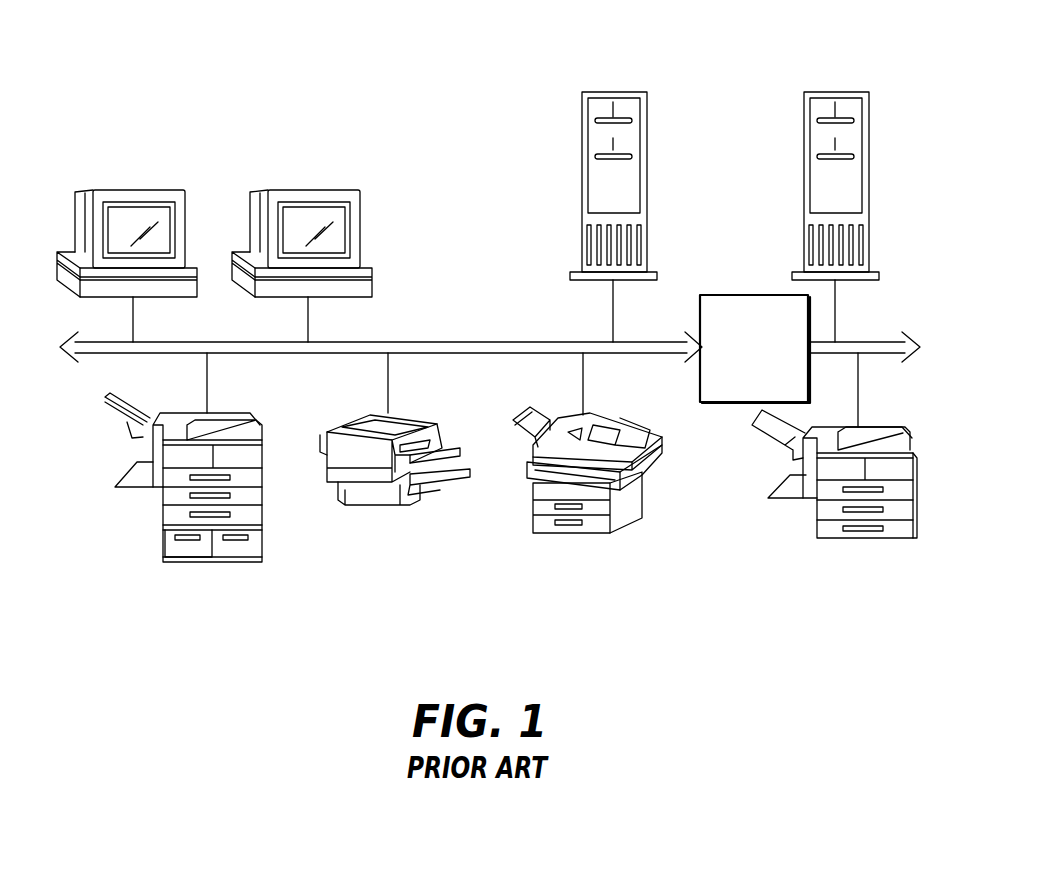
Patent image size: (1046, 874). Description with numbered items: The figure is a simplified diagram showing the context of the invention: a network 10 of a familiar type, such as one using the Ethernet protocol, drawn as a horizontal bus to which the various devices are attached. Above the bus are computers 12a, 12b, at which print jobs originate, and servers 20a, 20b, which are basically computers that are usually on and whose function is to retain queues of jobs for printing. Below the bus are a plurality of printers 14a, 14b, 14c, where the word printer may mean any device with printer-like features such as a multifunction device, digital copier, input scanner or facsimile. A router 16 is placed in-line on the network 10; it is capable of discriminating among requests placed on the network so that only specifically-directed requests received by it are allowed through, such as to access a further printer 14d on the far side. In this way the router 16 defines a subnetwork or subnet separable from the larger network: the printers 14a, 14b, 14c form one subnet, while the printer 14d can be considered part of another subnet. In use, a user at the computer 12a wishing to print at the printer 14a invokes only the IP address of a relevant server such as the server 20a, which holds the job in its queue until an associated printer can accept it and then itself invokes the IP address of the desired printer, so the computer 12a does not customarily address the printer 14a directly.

The network 10 is at (437, 342).
The computer 12a is at (187, 200).
The computer 12b is at (358, 200).
The printer 14a is at (197, 562).
The printer 14b is at (388, 510).
The printer 14c is at (543, 507).
The printer 14d is at (830, 538).
The router 16 is at (755, 349).
The server 20a is at (582, 122).
The server 20b is at (803, 122).